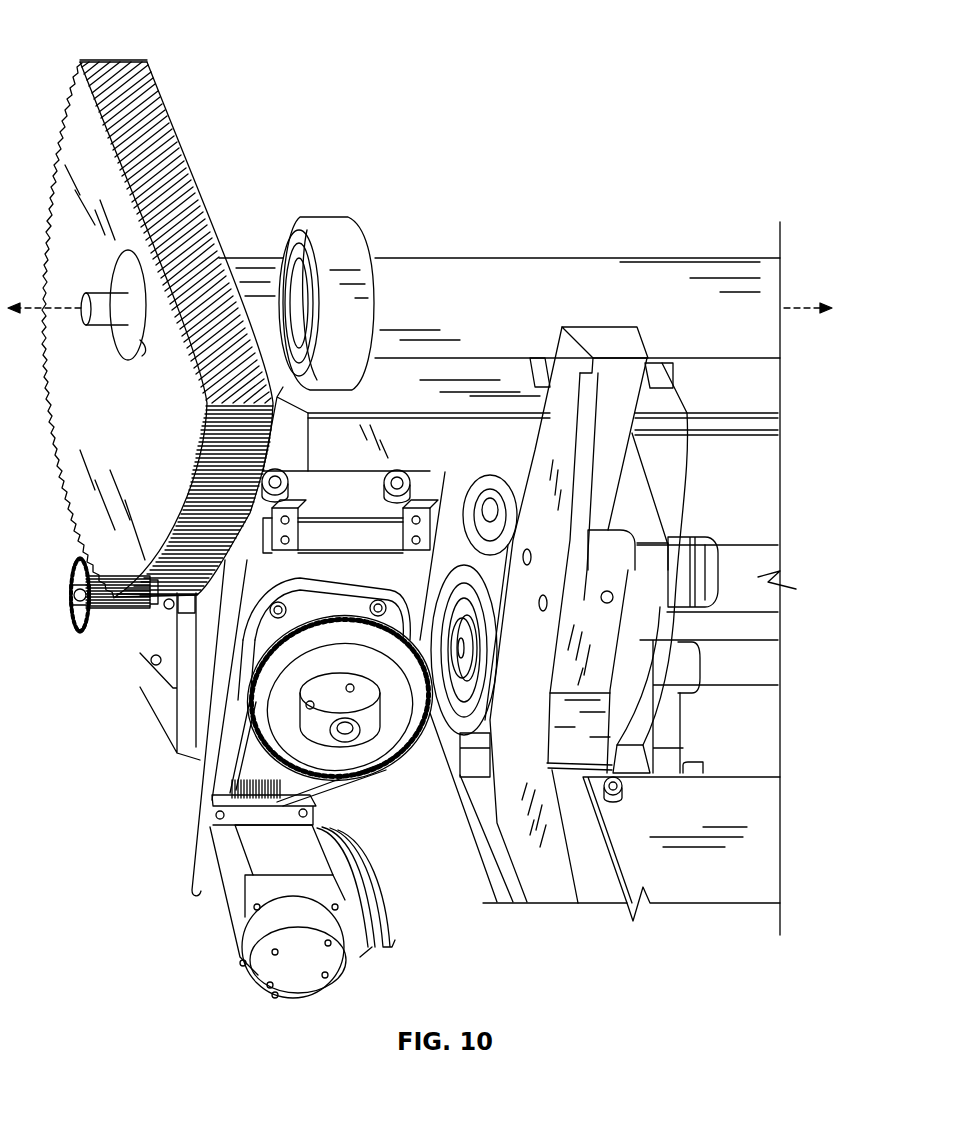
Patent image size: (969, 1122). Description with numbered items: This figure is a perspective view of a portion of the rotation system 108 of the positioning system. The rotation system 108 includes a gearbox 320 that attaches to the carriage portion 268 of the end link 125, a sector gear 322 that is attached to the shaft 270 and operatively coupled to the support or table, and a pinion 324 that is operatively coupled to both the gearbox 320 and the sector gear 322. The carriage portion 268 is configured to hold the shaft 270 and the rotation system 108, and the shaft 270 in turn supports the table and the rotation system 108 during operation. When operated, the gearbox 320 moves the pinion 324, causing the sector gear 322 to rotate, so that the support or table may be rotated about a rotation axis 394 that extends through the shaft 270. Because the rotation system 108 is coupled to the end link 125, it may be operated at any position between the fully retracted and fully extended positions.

The rotation system 108 is at (380, 66).
The sector gear 322 is at (150, 100).
The shaft 270 is at (443, 268).
The carriage portion 268 is at (496, 388).
The rotation axis 394 is at (792, 305).
The end link 125 is at (757, 487).
The pinion 324 is at (120, 626).
The gearbox 320 is at (215, 740).